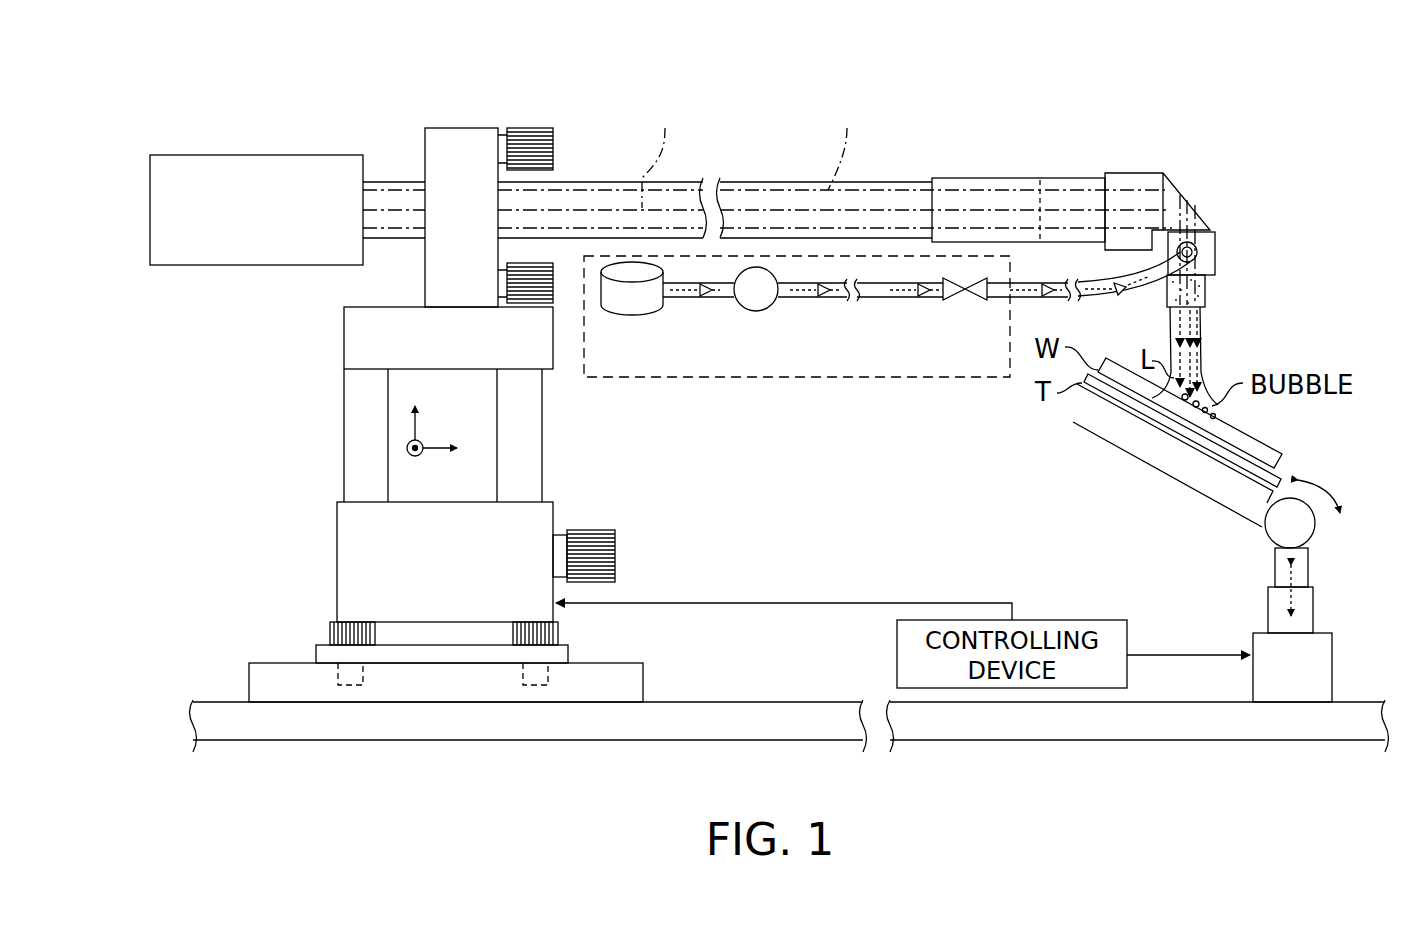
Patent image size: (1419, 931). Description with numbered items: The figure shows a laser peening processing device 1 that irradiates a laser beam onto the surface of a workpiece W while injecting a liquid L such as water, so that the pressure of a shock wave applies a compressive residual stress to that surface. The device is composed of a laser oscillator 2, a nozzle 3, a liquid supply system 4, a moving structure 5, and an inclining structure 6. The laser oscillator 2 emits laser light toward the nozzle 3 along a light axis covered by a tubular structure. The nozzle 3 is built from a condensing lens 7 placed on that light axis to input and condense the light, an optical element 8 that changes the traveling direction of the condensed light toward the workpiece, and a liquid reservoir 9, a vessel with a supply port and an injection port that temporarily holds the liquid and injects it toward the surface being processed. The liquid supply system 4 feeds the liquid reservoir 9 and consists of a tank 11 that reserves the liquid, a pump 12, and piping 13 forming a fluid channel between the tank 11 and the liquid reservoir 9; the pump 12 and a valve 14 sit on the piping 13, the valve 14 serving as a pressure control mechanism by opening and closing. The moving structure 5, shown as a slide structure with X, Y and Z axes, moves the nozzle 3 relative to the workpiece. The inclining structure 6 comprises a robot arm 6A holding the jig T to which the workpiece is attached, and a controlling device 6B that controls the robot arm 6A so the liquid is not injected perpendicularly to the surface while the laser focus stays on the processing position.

The laser peening processing device 1 is at (1333, 74).
The laser oscillator 2 is at (344, 153).
The nozzle 3 is at (829, 202).
The liquid supply system 4 is at (826, 354).
The moving structure 5 is at (344, 335).
The inclining structure 6 is at (1206, 543).
The robot arm 6A is at (1197, 500).
The controlling device 6B is at (1100, 620).
The condensing lens 7 is at (1047, 183).
The optical element 8 is at (1196, 224).
The liquid reservoir 9 is at (1211, 268).
The tank 11 is at (632, 314).
The pump 12 is at (770, 308).
The piping 13 is at (900, 298).
The valve 14 is at (975, 301).